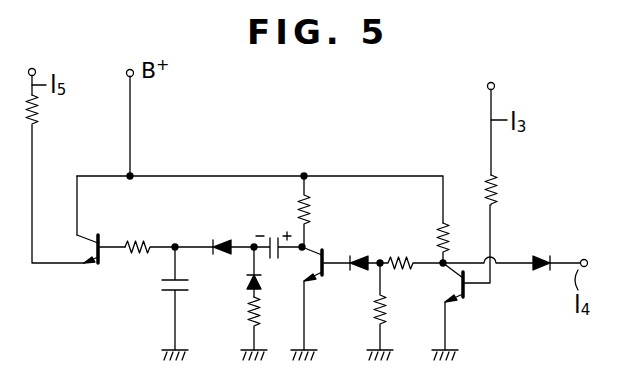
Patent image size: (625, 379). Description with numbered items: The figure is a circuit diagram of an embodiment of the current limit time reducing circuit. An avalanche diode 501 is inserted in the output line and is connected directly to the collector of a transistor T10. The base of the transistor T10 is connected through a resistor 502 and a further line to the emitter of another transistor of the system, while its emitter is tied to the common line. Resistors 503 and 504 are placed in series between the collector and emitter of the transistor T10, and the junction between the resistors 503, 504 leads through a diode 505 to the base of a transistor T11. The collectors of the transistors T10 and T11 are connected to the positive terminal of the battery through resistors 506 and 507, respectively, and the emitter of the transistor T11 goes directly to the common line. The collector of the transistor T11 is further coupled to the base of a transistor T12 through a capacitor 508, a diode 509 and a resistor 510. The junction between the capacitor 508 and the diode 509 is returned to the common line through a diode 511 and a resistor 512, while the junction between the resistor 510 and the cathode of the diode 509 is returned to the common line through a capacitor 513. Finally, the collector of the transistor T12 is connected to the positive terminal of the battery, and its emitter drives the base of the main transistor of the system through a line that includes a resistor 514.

The avalanche diode 501 is at (544, 256).
The resistor 502 is at (496, 193).
The resistor 503 is at (399, 256).
The resistor 504 is at (386, 312).
The diode 505 is at (360, 255).
The resistor 506 is at (447, 224).
The resistor 507 is at (320, 194).
The capacitor 508 is at (275, 237).
The diode 509 is at (222, 256).
The resistor 510 is at (134, 243).
The diode 511 is at (261, 281).
The resistor 512 is at (259, 318).
The capacitor 513 is at (160, 288).
The resistor 514 is at (38, 120).
The transistor T10 is at (452, 305).
The transistor T11 is at (313, 280).
The transistor T12 is at (90, 268).